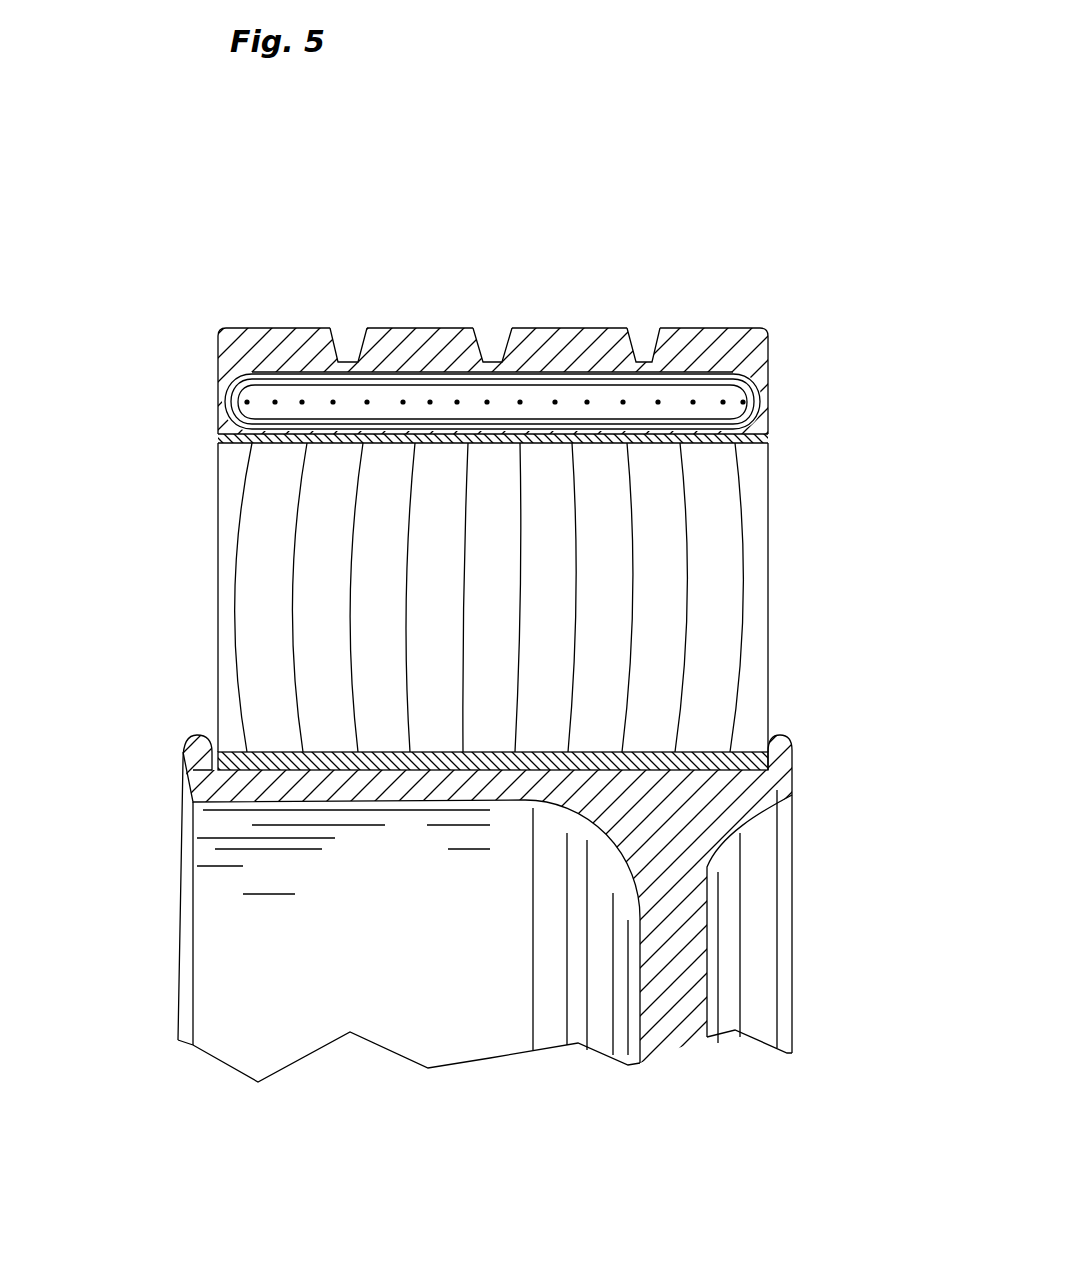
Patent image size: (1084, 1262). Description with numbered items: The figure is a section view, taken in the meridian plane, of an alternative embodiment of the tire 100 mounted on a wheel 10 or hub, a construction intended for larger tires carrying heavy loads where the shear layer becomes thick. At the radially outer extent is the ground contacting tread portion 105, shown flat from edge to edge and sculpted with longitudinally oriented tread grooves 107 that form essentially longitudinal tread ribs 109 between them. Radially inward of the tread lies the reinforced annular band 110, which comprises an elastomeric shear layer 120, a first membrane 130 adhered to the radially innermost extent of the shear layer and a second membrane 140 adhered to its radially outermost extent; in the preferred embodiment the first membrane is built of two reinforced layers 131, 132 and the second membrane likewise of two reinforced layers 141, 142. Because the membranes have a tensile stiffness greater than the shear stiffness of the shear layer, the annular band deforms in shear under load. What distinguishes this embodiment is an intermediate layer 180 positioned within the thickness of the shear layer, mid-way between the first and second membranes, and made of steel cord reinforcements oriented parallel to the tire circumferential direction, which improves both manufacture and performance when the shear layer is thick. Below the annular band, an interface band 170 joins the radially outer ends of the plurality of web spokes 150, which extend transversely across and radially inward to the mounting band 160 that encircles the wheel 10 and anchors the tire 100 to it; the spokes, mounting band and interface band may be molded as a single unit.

The wheel 10 is at (184, 828).
The tire 100 is at (168, 266).
The tread portion 105 is at (303, 325).
The tread grooves 107 is at (492, 340).
The tread ribs 109 is at (550, 328).
The reinforced annular band 110 is at (194, 393).
The elastomeric shear layer 120 is at (455, 405).
The first membrane 130 is at (569, 436).
The reinforced layer 131 is at (727, 445).
The reinforced layer 132 is at (493, 438).
The second membrane 140 is at (666, 372).
The reinforced layer 141 is at (703, 383).
The reinforced layer 142 is at (501, 402).
The web spokes 150 is at (213, 560).
The mounting band 160 is at (705, 742).
The interface band 170 is at (283, 444).
The intermediate layer 180 is at (522, 406).